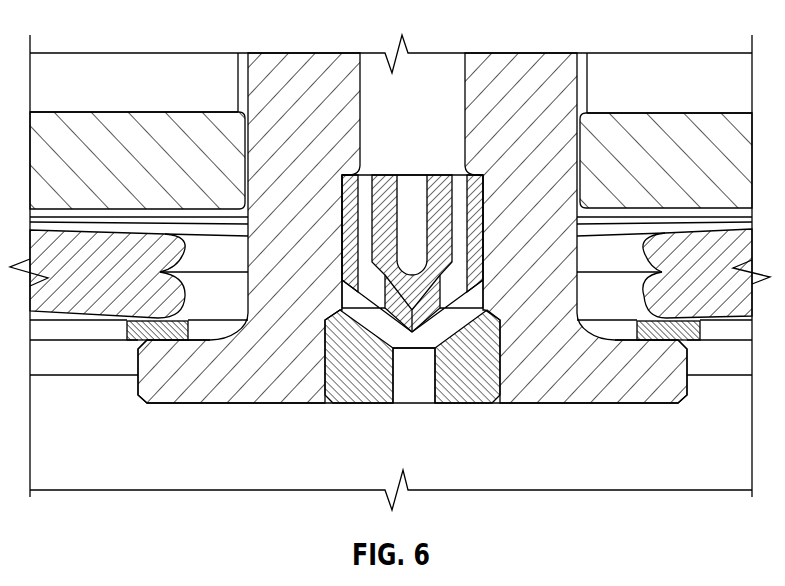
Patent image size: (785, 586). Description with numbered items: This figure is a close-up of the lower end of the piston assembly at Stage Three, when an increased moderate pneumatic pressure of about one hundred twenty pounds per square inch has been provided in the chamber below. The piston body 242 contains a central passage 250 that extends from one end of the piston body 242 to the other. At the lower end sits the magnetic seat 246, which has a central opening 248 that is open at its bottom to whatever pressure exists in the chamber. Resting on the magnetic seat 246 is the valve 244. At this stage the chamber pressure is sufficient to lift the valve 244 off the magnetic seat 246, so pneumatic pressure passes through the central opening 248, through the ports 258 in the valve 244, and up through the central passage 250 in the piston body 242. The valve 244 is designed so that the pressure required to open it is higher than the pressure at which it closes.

The central passage 250 is at (437, 68).
The piston body 242 is at (247, 392).
The valve 244 is at (437, 175).
The ports 258 is at (366, 181).
The magnetic seat 246 is at (473, 392).
The central opening 248 is at (410, 392).